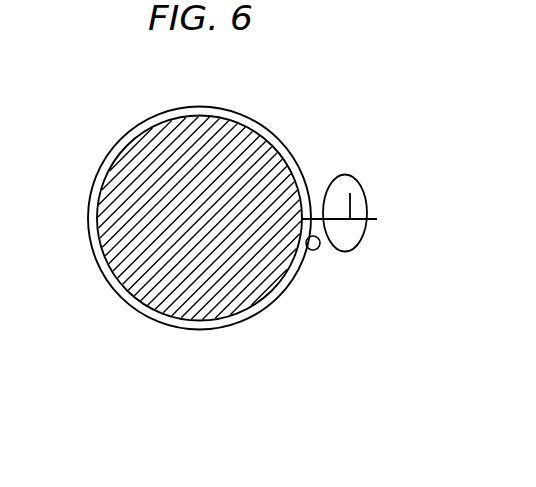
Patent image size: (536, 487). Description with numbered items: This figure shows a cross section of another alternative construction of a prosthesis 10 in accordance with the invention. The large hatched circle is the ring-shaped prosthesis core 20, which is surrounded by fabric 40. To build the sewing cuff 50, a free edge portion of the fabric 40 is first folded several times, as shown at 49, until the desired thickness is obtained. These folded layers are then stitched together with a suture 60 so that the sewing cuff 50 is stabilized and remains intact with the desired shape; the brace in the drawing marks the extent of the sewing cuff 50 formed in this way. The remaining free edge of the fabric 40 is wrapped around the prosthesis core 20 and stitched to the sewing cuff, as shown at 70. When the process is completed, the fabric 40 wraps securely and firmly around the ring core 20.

The implant assembly 10 is at (215, 62).
The prosthesis core 20 is at (138, 281).
The fabric 40 is at (118, 148).
The folded free edge portion 49 is at (338, 248).
The sewing cuff 50 is at (403, 185).
The suture 60 is at (370, 222).
The stitching to sewing cuff 70 is at (313, 250).